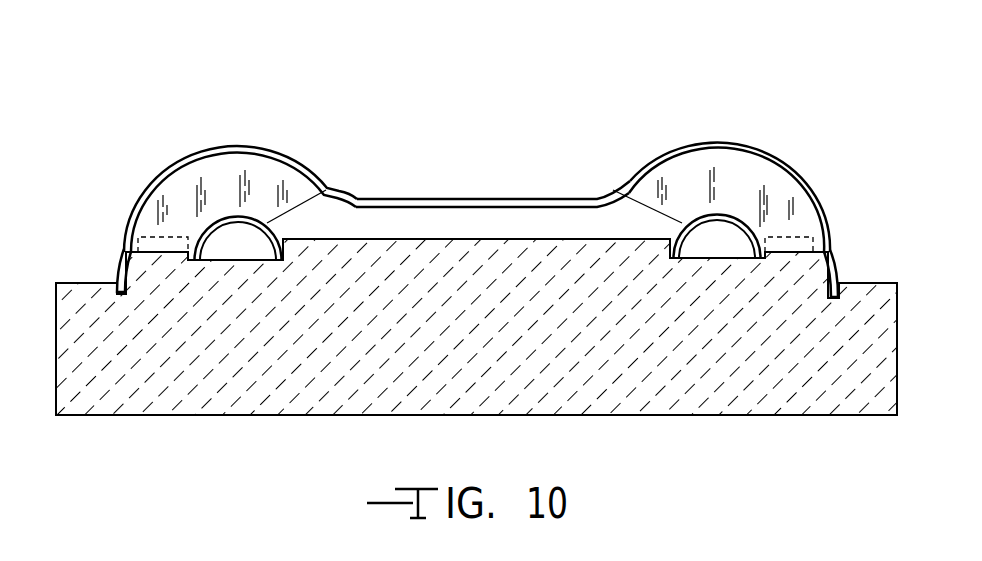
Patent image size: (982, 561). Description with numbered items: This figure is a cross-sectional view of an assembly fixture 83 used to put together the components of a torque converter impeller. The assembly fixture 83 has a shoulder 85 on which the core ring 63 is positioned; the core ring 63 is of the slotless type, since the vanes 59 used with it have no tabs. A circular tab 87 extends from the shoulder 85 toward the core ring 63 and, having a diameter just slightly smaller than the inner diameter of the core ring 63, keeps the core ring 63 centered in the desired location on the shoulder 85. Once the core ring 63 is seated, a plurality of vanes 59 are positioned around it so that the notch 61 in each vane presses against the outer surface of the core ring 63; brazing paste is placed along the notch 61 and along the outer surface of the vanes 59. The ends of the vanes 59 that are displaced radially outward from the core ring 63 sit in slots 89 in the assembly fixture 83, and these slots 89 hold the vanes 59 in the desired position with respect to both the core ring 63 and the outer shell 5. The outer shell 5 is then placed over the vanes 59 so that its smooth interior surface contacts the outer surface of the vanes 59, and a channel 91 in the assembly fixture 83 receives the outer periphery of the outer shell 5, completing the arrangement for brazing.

The outer shell 5 is at (228, 146).
The vanes 59 is at (727, 177).
The notch 61 is at (703, 217).
The core ring 63 is at (765, 168).
The assembly fixture 83 is at (643, 408).
The shoulder 85 is at (717, 258).
The circular tab 87 is at (668, 240).
The slots 89 is at (797, 233).
The channel 91 is at (118, 288).